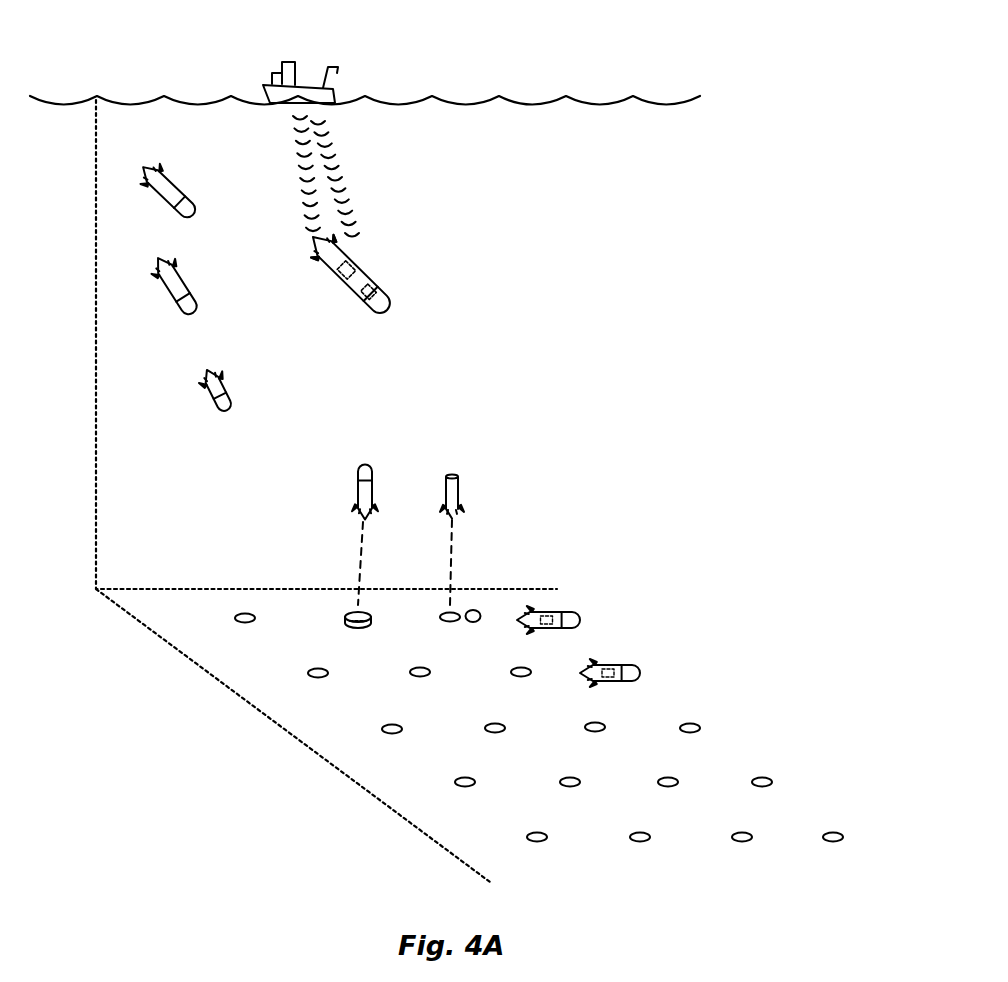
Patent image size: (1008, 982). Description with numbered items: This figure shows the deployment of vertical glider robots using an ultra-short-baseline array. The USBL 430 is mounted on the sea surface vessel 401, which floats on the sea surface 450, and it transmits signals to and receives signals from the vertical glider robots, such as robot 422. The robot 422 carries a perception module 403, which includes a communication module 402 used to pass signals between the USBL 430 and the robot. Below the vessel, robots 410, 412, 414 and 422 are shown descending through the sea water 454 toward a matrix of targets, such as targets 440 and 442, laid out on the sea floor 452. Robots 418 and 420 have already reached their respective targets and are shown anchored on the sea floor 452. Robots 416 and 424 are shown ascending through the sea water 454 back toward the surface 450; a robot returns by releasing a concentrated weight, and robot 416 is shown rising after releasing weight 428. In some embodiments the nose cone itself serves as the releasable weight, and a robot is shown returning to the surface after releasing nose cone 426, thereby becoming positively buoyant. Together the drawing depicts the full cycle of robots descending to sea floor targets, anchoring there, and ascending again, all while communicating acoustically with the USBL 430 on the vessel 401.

The sea surface vessel 401 is at (262, 95).
The ultra-short-baseline array 430 is at (292, 62).
The sea surface 450 is at (447, 102).
The communication module 402 is at (362, 223).
The perception module 403 is at (347, 267).
The vertical glider robot 422 is at (352, 293).
The vertical glider robot 410 is at (187, 213).
The vertical glider robot 412 is at (185, 310).
The vertical glider robot 414 is at (213, 390).
The vertical glider robot 416 is at (367, 488).
The vertical glider robot 424 is at (452, 488).
The vertical glider robot 418 is at (572, 614).
The vertical glider robot 420 is at (643, 672).
The nose cone 426 is at (472, 622).
The weight 428 is at (373, 623).
The target 440 is at (243, 620).
The target 442 is at (318, 670).
The sea floor 452 is at (424, 778).
The sea water 454 is at (508, 426).